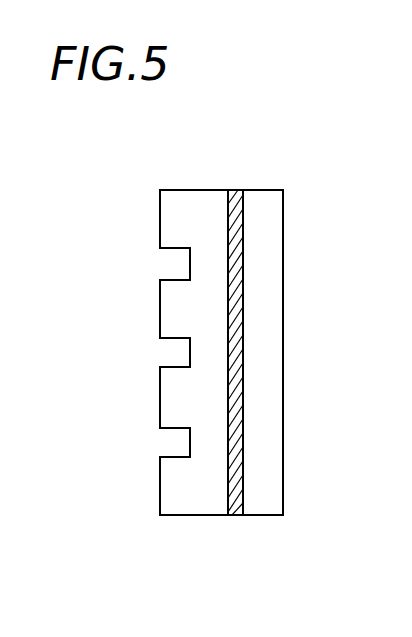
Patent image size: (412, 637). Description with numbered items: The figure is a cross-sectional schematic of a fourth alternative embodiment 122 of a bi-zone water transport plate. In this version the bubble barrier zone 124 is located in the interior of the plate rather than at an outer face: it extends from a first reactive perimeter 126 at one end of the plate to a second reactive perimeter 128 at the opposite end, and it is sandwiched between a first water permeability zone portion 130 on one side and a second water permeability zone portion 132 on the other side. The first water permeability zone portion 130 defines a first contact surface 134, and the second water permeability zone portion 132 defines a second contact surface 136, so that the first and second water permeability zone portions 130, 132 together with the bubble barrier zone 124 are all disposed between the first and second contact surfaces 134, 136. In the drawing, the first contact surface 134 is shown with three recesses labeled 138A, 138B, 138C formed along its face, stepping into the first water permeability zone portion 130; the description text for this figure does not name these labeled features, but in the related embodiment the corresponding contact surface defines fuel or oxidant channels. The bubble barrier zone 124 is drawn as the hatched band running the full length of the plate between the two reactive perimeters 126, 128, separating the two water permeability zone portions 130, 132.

The fourth alternative embodiment of a bi-zone water transport plate 122 is at (282, 163).
The bubble barrier zone 124 is at (245, 232).
The first reactive perimeter 126 is at (188, 189).
The second reactive perimeter 128 is at (265, 516).
The first water permeability zone portion 130 is at (197, 225).
The second water permeability zone portion 132 is at (248, 293).
The first contact surface 134 is at (160, 313).
The second contact surface 136 is at (283, 392).
The first groove 138A is at (175, 265).
The second groove 138B is at (180, 350).
The third groove 138C is at (180, 442).